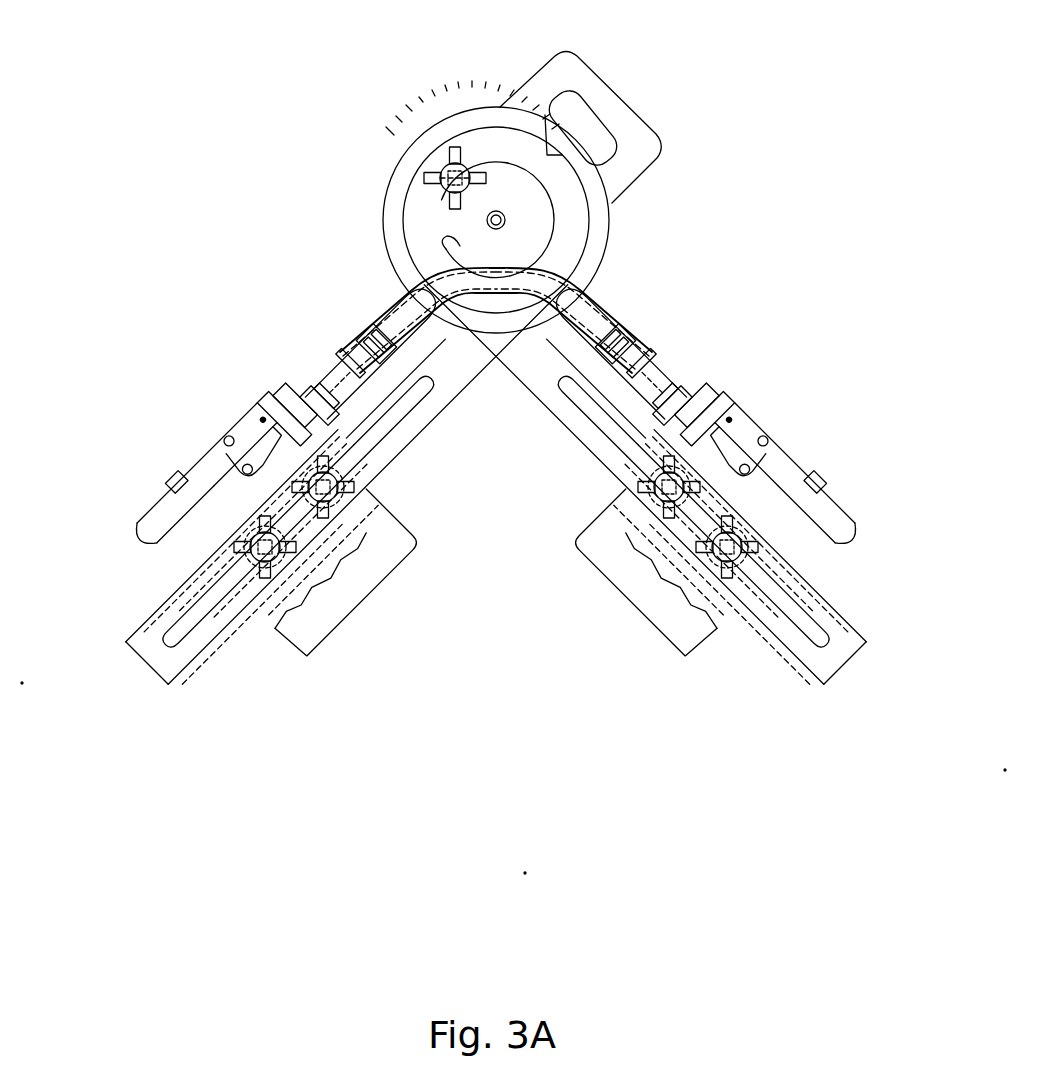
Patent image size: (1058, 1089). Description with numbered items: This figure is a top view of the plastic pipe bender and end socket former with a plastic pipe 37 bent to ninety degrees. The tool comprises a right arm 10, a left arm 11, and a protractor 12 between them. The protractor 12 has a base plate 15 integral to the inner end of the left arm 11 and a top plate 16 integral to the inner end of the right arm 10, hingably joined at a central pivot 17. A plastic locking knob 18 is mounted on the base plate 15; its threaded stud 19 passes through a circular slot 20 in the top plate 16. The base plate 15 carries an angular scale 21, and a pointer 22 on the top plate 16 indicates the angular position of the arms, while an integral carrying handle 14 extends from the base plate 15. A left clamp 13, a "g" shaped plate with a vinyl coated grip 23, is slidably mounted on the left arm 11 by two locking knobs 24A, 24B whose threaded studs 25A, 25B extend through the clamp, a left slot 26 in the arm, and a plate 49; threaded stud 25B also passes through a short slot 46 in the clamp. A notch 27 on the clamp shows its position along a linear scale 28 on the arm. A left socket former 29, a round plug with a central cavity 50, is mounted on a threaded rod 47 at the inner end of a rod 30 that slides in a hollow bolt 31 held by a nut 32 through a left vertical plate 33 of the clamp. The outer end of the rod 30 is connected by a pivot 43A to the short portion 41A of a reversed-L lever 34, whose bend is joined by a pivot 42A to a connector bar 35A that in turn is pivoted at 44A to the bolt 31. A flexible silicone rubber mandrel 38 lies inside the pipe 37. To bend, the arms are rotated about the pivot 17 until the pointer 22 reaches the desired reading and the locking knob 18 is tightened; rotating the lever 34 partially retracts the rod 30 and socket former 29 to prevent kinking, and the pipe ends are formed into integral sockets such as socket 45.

The right arm 10 is at (645, 463).
The left arm 11 is at (347, 463).
The protractor 12 is at (452, 106).
The left clamp 13 is at (200, 473).
The carrying handle 14 is at (538, 78).
The base plate 15 is at (610, 233).
The top plate 16 is at (606, 193).
The central pivot 17 is at (499, 212).
The locking knob 18 is at (447, 160).
The threaded stud 19 is at (438, 178).
The circular slot 20 is at (558, 213).
The angular scale 21 is at (493, 118).
The pointer 22 is at (562, 155).
The grip 23 is at (335, 573).
The locking knob 24A is at (356, 490).
The locking knob 24B is at (266, 580).
The threaded stud 25A is at (324, 560).
The threaded stud 25B is at (263, 603).
The left slot 26 is at (147, 663).
The notch 27 is at (321, 581).
The linear scale 28 is at (262, 547).
The left socket former 29 is at (351, 363).
The rod 30 is at (320, 406).
The hollow bolt 31 is at (394, 414).
The nut 32 is at (284, 418).
The left vertical plate 33 is at (295, 405).
The lever 34 is at (143, 536).
The connector bar 35A is at (245, 455).
The plastic pipe 37 is at (388, 326).
The mandrel 38 is at (403, 308).
The short portion 41A is at (255, 448).
The pivot 42A is at (229, 441).
The pivot 43A is at (247, 469).
The pivot 44A is at (262, 419).
The integral socket 45 is at (373, 351).
The short slot 46 is at (265, 526).
The threaded rod 47 is at (338, 384).
The plate 49 is at (243, 533).
The central cavity 50 is at (376, 344).